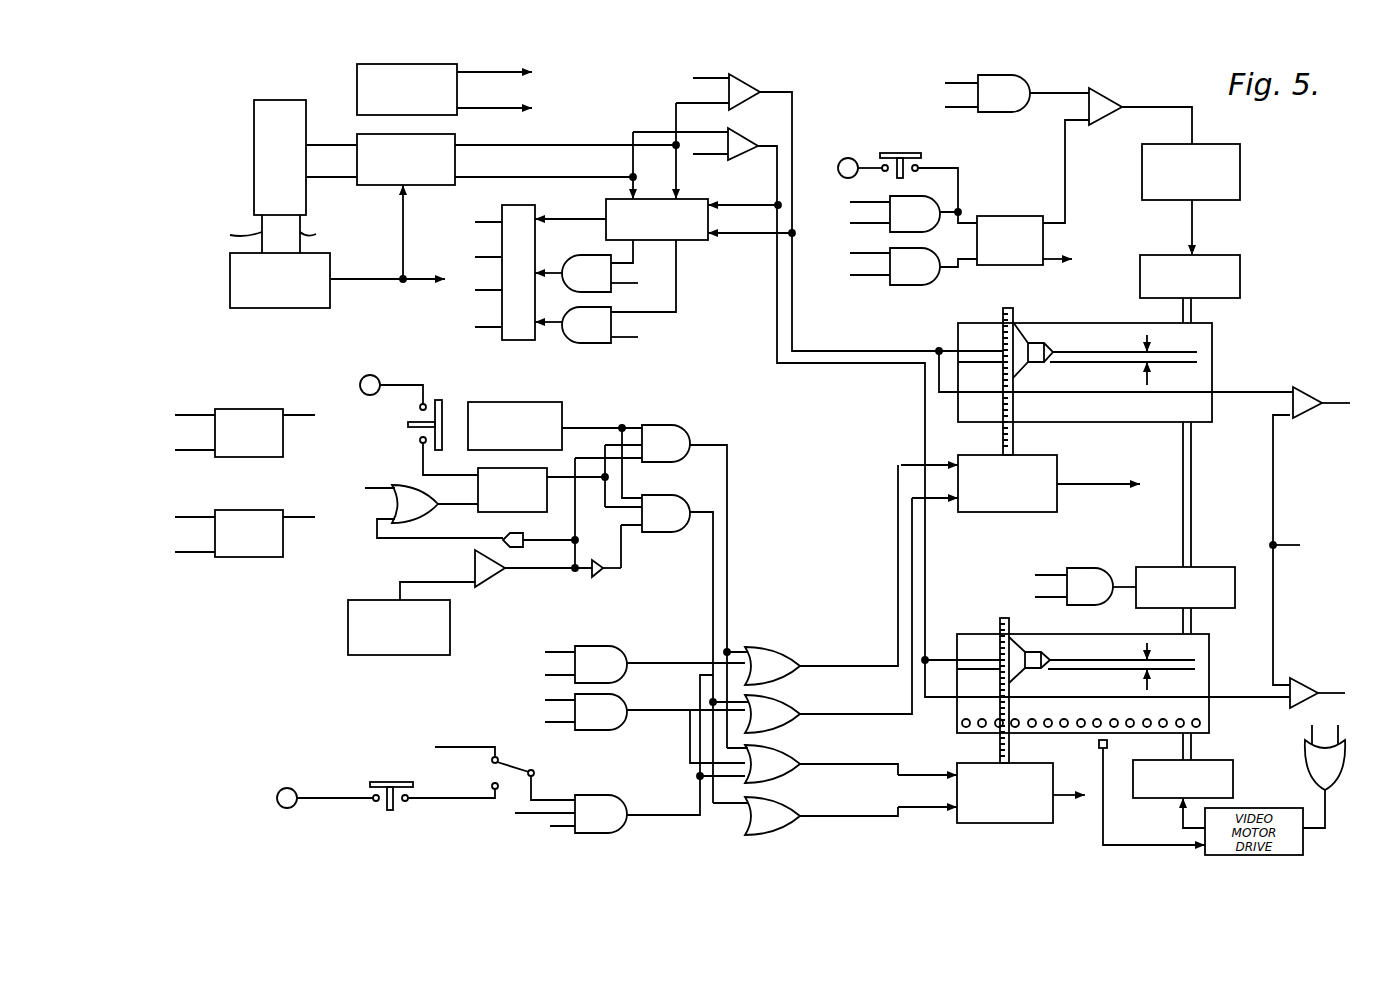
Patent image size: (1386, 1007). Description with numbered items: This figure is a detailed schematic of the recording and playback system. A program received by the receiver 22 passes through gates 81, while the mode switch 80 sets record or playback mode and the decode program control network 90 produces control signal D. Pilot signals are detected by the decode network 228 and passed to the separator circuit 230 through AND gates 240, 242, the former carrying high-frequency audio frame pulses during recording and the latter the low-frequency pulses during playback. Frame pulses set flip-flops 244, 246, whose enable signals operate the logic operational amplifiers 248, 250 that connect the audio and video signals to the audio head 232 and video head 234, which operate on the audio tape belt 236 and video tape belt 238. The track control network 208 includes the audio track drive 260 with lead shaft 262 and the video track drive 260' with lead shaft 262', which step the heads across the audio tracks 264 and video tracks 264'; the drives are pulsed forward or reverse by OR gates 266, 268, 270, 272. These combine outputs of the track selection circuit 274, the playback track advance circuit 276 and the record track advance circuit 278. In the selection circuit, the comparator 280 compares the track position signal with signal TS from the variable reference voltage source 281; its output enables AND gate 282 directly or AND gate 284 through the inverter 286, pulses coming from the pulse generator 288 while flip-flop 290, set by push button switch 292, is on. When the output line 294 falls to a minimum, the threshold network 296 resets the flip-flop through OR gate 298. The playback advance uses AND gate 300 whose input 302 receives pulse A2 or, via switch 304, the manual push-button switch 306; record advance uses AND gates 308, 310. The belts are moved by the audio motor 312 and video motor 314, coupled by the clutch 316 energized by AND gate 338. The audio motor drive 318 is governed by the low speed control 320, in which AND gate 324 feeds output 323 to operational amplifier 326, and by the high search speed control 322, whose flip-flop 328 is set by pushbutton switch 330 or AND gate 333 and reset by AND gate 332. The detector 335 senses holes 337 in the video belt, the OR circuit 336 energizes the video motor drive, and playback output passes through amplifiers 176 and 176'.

The receiver 22 is at (254, 152).
The mode switch 80 is at (357, 72).
The gates 81 is at (392, 185).
The decode program control network 90 is at (278, 308).
The amplifier 176 is at (1144, 518).
The analog logic amplifier 176' is at (1319, 674).
The track control network 208 is at (866, 568).
The decode network 228 is at (708, 240).
The separator circuit 230 is at (502, 333).
The audio head 232 is at (1035, 340).
The video head 234 is at (1032, 650).
The audio tape belt 236 is at (1095, 323).
The video tape belt 238 is at (1133, 630).
The AND gate 240 is at (588, 243).
The AND gate 242 is at (585, 343).
The flip-flop 244 is at (250, 409).
The flip-flop 246 is at (240, 557).
The logic operational amplifier 248 is at (752, 82).
The logic operational amplifier 250 is at (740, 130).
The audio track drive 260 is at (1020, 501).
The video track drive 260' is at (992, 806).
The lead shaft 262 is at (1040, 381).
The lead shaft 262' is at (1033, 690).
The audio tracks 264 is at (1119, 363).
The video tracks 264' is at (1106, 668).
The forward OR gate 266 is at (772, 647).
The reverse OR gate 268 is at (788, 695).
The forward OR gate 270 is at (786, 745).
The reverse OR gate 272 is at (784, 797).
The track selection circuit 274 is at (342, 640).
The playback track advance circuit 276 is at (418, 749).
The record track advance circuit 278 is at (540, 687).
The comparator 280 is at (495, 580).
The variable reference voltage source 281 is at (368, 600).
The AND gate 282 is at (685, 425).
The AND gate 284 is at (680, 495).
The inverter 286 is at (605, 578).
The pulse generator 288 is at (520, 402).
The flip-flop 290 is at (530, 512).
The push button switch 292 is at (440, 395).
The output line 294 is at (578, 548).
The threshold network 296 is at (515, 547).
The OR gate 298 is at (425, 518).
The AND gate 300 is at (612, 795).
The input 302 is at (552, 797).
The switch 304 is at (480, 770).
The push-button switch 306 is at (380, 808).
The AND gate 308 is at (630, 648).
The AND gate 310 is at (622, 730).
The audio motor 312 is at (1240, 272).
The video motor 314 is at (1218, 760).
The clutch 316 is at (1215, 567).
The audio motor drive 318 is at (1222, 144).
The low speed control 320 is at (1105, 80).
The high search speed control 322 is at (1060, 245).
The output 323 is at (1045, 100).
The AND gate 324 is at (1018, 78).
The operational amplifier 326 is at (1110, 100).
The flip-flop 328 is at (1005, 216).
The pushbutton switch 330 is at (905, 152).
The AND gate 332 is at (935, 282).
The AND gate 333 is at (905, 196).
The splice and video belt speed detector 335 is at (1110, 746).
The OR circuit 336 is at (1305, 770).
The holes 337 is at (1196, 719).
The AND gate 338 is at (1085, 568).